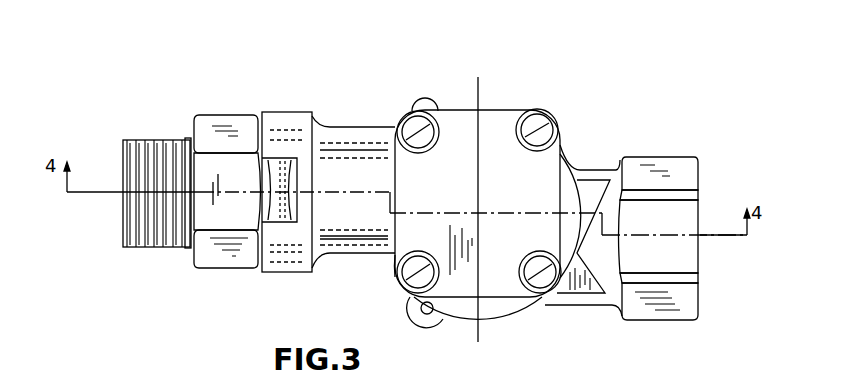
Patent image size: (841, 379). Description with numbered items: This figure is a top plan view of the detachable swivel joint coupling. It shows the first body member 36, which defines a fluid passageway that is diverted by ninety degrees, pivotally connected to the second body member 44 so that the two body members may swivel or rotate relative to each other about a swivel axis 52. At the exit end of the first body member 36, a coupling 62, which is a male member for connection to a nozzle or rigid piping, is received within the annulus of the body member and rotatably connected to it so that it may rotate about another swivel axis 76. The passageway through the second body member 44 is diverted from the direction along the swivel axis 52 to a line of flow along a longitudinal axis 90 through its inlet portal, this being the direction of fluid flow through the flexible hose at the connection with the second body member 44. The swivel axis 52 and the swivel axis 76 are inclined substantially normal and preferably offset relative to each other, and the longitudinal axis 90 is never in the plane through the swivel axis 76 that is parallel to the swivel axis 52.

The first body member 36 is at (395, 122).
The second body member 44 is at (647, 157).
The swivel axis 52 is at (478, 213).
The coupling 62 is at (229, 115).
The swivel axis 76 is at (88, 194).
The longitudinal axis 90 is at (723, 234).